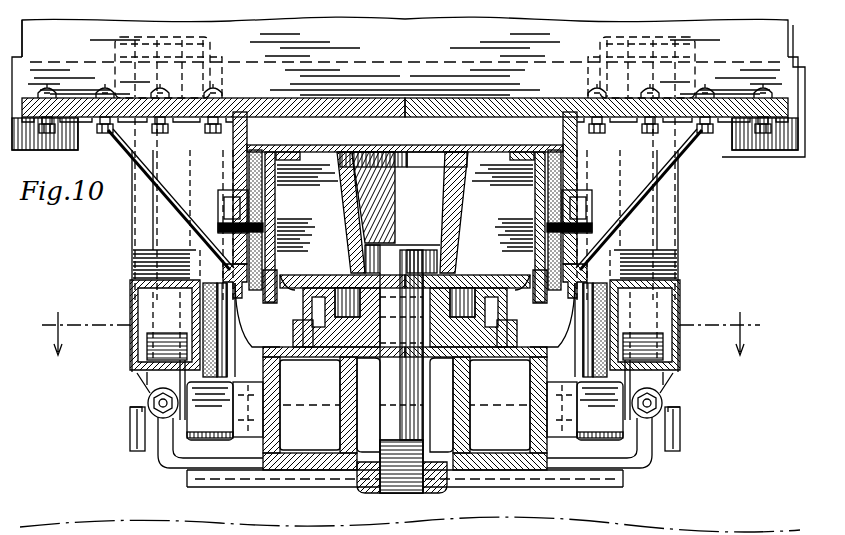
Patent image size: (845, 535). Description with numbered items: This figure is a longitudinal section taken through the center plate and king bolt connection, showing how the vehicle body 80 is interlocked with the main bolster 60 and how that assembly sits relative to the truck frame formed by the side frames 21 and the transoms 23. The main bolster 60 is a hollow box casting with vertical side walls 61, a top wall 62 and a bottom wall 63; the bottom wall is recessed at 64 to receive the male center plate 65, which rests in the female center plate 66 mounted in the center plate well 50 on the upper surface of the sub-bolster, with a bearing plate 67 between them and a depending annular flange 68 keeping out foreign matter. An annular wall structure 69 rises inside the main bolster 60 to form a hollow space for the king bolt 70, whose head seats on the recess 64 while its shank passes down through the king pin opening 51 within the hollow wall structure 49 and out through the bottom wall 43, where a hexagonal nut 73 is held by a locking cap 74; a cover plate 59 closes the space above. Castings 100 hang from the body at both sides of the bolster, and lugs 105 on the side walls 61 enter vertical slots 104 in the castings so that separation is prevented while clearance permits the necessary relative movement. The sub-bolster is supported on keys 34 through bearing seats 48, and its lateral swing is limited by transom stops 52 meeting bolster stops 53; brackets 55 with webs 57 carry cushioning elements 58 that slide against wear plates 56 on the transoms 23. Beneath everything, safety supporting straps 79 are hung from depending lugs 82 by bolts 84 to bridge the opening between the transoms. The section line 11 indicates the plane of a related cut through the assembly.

The vehicle body 80 is at (413, 88).
The side frames 21 is at (397, 273).
The king bolt 70 is at (412, 273).
The annular wall structure 69 is at (343, 197).
The main bolster 60 is at (300, 142).
The cover plate 59 is at (380, 143).
The top wall 62 is at (512, 146).
The castings 100 is at (700, 158).
The vertical slots 104 is at (562, 185).
The lugs 105 is at (600, 212).
The side walls 61 is at (520, 232).
The recess 64 is at (338, 275).
The bottom wall 63 is at (288, 290).
The male center plate 65 is at (467, 275).
The depending annular flange 68 is at (493, 292).
The transoms 23 is at (680, 322).
The wear plates 56 is at (600, 312).
The cushioning elements 58 is at (192, 320).
The brackets 55 is at (234, 305).
The webs 57 is at (232, 352).
The center plate well 50 is at (522, 336).
The section line 11 is at (393, 325).
The depending lugs 82 is at (660, 392).
The bolts 84 is at (662, 405).
The key 34 is at (130, 428).
The bearing plate 67 is at (305, 392).
The bearing seat 48 is at (299, 389).
The king pin opening 51 is at (372, 420).
The female center plate 66 is at (438, 362).
The hollow wall structure 49 is at (489, 393).
The bottom wall 43 is at (487, 455).
The safety supporting straps 79 is at (642, 470).
The stops 52 is at (220, 420).
The stops 53 is at (250, 428).
The hexagonal nut 73 is at (425, 492).
The locking cap 74 is at (442, 491).